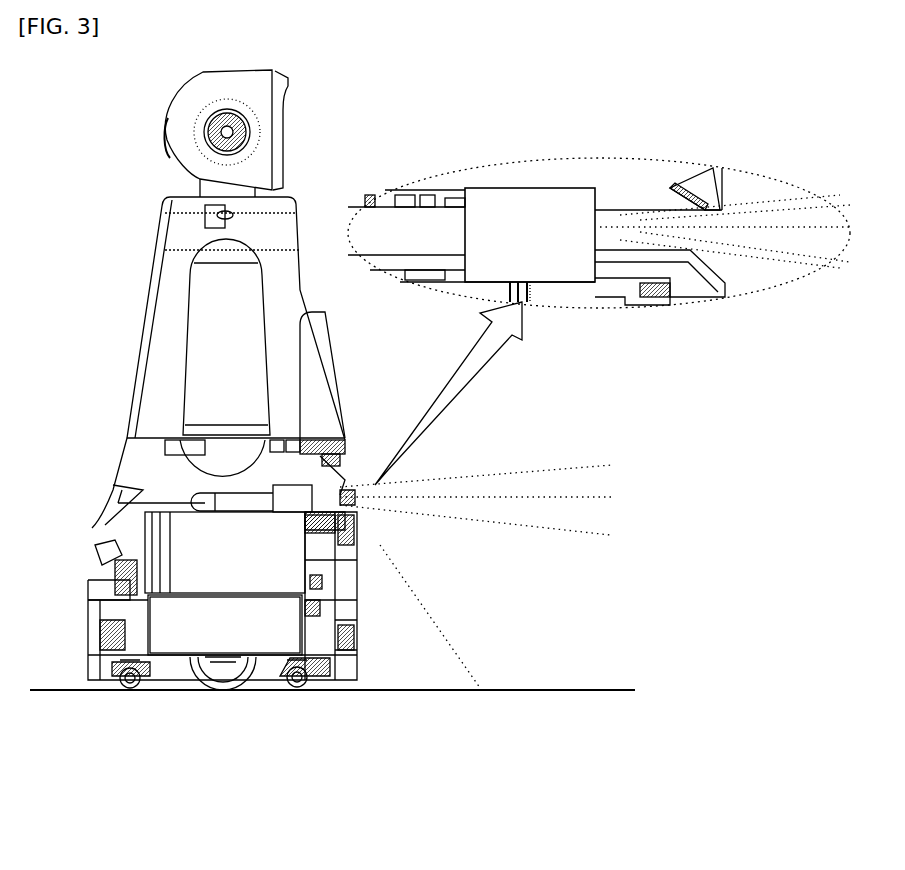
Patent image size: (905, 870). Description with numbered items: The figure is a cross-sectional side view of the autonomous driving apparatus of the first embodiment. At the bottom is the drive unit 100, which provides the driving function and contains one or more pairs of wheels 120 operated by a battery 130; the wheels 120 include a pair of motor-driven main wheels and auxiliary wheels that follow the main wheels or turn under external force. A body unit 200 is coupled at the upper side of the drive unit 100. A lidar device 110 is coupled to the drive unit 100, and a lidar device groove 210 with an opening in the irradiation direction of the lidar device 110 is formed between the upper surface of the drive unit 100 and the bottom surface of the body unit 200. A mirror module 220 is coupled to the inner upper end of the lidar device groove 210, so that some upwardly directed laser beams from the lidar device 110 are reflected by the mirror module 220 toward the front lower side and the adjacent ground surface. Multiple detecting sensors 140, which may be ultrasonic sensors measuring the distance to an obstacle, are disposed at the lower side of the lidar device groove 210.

The drive unit 100 is at (88, 586).
The body unit 200 is at (338, 380).
The lidar device 110 is at (303, 493).
The wheels 120 is at (225, 692).
The battery 130 is at (177, 645).
The detecting sensor 140 is at (351, 684).
The lidar device groove 210 is at (340, 520).
The mirror module 220 is at (345, 492).